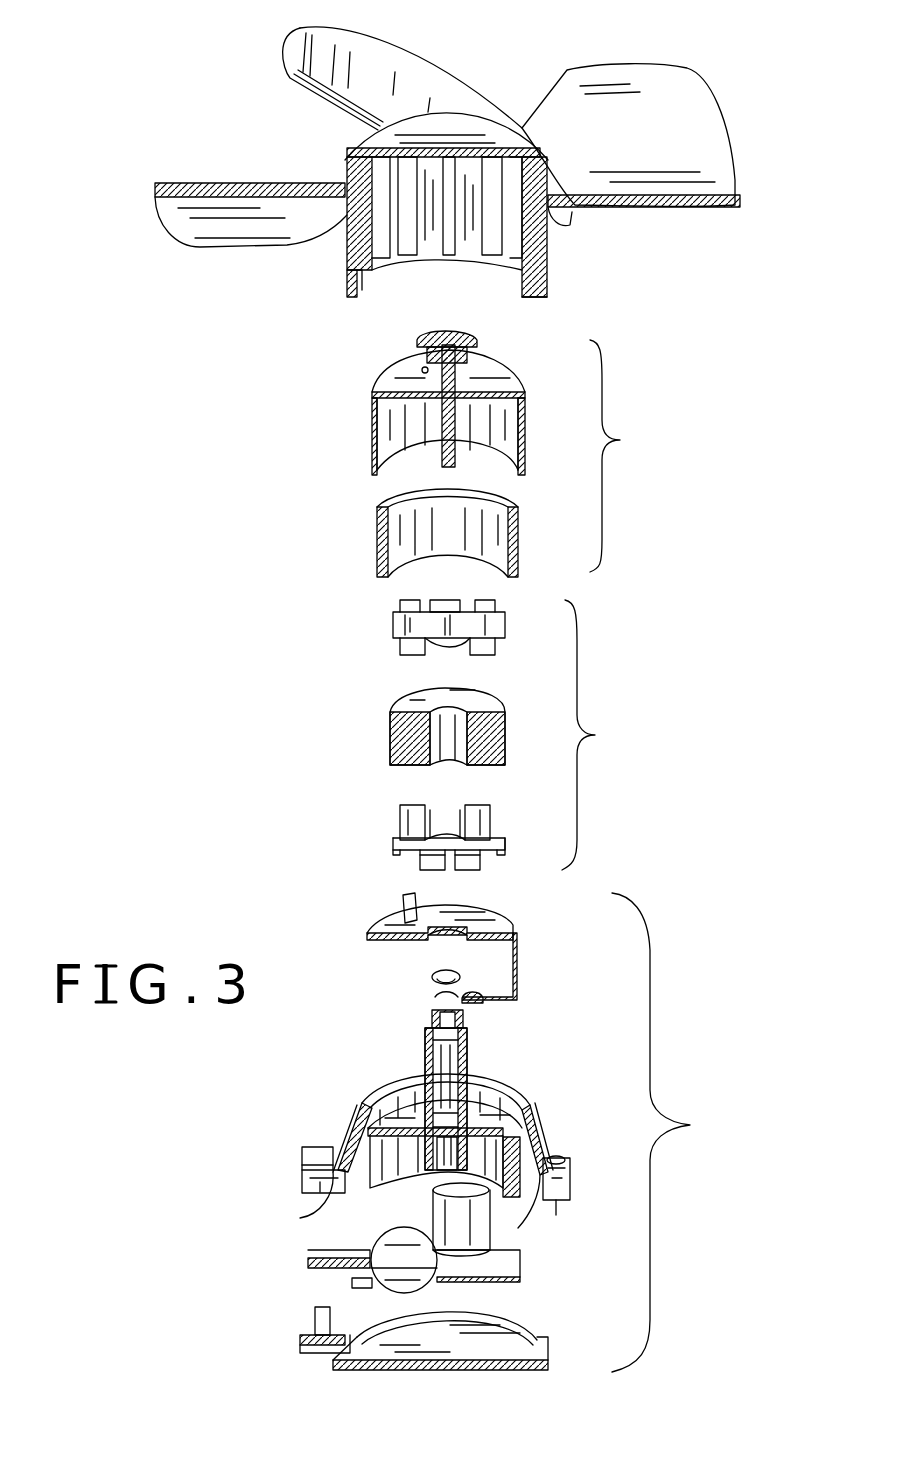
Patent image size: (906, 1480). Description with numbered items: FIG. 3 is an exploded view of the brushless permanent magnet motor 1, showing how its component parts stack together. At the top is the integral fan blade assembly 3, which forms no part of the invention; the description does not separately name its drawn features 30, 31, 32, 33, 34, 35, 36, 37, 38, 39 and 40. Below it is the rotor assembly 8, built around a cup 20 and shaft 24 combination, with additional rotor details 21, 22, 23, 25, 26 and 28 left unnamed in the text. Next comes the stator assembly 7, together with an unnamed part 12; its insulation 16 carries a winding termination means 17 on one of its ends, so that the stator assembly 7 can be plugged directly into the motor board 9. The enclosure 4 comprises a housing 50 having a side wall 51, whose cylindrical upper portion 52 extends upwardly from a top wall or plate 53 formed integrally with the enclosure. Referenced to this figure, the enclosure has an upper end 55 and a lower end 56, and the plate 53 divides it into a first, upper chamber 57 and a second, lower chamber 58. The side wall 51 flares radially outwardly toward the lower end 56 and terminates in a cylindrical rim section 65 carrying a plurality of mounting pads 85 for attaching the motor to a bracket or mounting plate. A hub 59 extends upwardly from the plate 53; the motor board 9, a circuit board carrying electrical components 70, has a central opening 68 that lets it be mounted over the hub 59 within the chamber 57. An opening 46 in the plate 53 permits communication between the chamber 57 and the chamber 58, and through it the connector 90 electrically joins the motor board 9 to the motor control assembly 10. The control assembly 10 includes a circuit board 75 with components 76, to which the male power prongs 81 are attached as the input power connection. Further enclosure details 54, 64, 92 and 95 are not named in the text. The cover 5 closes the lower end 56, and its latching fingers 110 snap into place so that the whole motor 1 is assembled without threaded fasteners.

The brushless permanent magnet motor 1 is at (600, 38).
The integral fan blade assembly 3 is at (552, 268).
The enclosure 4 is at (550, 1120).
The cover 5 is at (548, 1365).
The stator assembly 7 is at (600, 735).
The rotor assembly 8 is at (629, 456).
The motor board 9 is at (510, 915).
The motor control assembly 10 is at (676, 1132).
The magnet 12 is at (490, 705).
The insulation 16 is at (470, 635).
The winding termination means 17 is at (420, 856).
The cup 20 is at (525, 428).
The cup top 21 is at (505, 383).
The cup wall 22 is at (372, 437).
The aperture 23 is at (430, 385).
The shaft 24 is at (525, 457).
The cap 25 is at (450, 333).
The ring 26 is at (378, 530).
The cup lower edge 28 is at (375, 470).
The fan blade 30 is at (490, 140).
The fan blade 31 is at (680, 105).
The hub top 32 is at (446, 136).
The post 33 is at (345, 258).
The hub interior 34 is at (358, 302).
The blade root 35 is at (548, 240).
The inner ring 36 is at (415, 255).
The hub wall 37 is at (378, 183).
The hub skirt 38 is at (512, 258).
The hub lip 39 is at (347, 290).
The fan blade 40 is at (345, 220).
The opening 46 is at (518, 1110).
The housing 50 is at (573, 1170).
The side wall 51 is at (548, 1142).
The cylindrical upper portion 52 is at (392, 1080).
The top wall or plate 53 is at (535, 1100).
The housing bottom 54 is at (395, 1170).
The upper end 55 is at (352, 1098).
The lower end 56 is at (530, 1185).
The first, upper chamber 57 is at (520, 1085).
The second, lower chamber 58 is at (398, 1183).
The hub 59 is at (467, 1050).
The bearing 64 is at (440, 1170).
The cylindrical rim section 65 is at (488, 1195).
The central opening 68 is at (437, 942).
The electrical connections and components 70 is at (403, 903).
The circuit board 75 is at (470, 1262).
The components 76 is at (342, 1284).
The prongs 81 is at (308, 1263).
The mounting pads 85 is at (568, 1190).
The connector 90 is at (517, 975).
The lug 92 is at (340, 1185).
The wall 95 is at (505, 1165).
The latching fingers 110 is at (297, 1340).